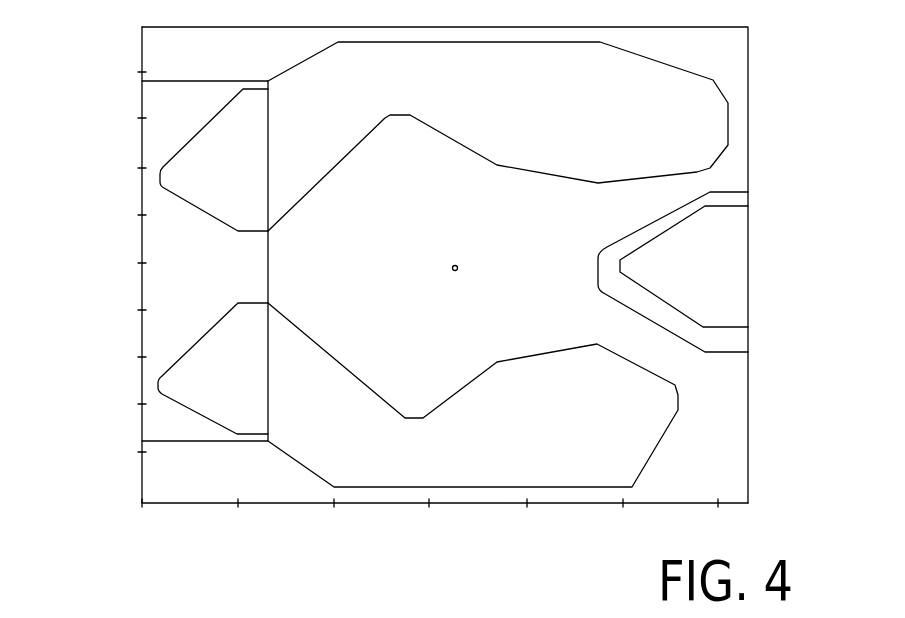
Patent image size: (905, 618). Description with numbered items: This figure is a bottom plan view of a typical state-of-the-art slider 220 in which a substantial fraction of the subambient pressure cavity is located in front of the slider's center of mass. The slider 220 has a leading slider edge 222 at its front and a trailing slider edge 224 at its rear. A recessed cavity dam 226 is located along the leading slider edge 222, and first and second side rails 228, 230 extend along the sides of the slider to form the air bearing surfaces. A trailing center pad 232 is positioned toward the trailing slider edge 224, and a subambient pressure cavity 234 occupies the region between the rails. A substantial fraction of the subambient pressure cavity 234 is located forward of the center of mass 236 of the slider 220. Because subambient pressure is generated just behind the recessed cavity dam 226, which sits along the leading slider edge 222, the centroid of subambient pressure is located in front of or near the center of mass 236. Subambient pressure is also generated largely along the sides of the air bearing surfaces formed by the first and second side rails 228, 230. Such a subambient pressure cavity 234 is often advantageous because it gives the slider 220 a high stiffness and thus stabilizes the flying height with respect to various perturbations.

The slider 220 is at (284, 513).
The leading slider edge 222 is at (142, 478).
The trailing slider edge 224 is at (748, 472).
The recessed cavity dam 226 is at (165, 283).
The first side rail 228 is at (571, 491).
The second side rail 230 is at (616, 41).
The trailing center pad 232 is at (748, 262).
The subambient pressure cavity 234 is at (370, 252).
The center of mass 236 is at (458, 262).